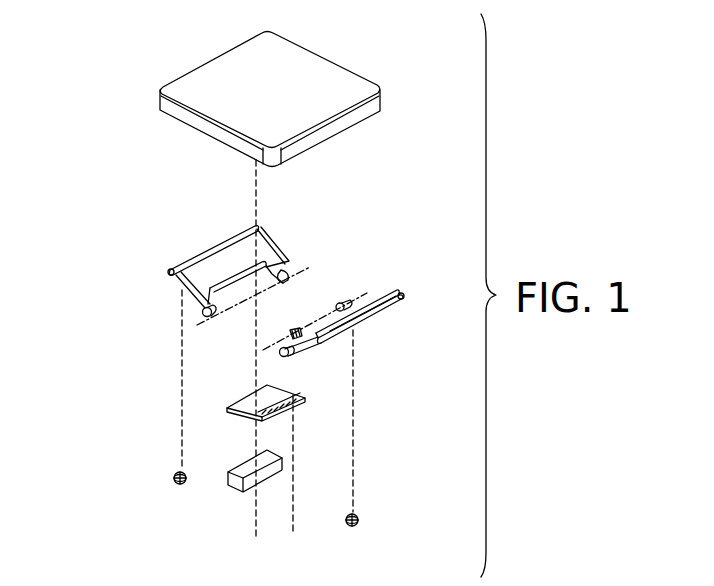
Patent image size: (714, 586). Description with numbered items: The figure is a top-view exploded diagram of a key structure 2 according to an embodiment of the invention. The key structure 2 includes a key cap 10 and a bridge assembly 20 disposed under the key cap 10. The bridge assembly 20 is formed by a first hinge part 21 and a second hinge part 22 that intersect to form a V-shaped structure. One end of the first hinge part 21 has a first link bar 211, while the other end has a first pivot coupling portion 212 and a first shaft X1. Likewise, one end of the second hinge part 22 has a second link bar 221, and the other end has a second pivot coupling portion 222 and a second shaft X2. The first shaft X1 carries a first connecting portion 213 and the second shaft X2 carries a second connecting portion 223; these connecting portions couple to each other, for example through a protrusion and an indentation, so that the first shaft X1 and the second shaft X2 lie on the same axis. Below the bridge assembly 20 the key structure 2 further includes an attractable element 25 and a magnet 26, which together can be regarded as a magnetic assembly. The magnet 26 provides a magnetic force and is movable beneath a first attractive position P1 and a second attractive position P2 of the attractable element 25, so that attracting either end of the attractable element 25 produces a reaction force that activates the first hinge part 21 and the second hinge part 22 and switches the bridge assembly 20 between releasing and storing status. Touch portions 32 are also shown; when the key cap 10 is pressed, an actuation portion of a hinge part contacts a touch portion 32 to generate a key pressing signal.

The key structure 2 is at (84, 72).
The key cap 10 is at (312, 72).
The bridge assembly 20 is at (417, 285).
The first hinge part 21 is at (270, 257).
The first link bar 211 is at (170, 273).
The first pivot coupling portion 212 is at (203, 315).
The first connecting portion 213 is at (234, 313).
The second hinge part 22 is at (372, 320).
The second link bar 221 is at (402, 298).
The second pivot coupling portion 222 is at (286, 356).
The second connecting portion 223 is at (283, 337).
The attractable element 25 is at (288, 414).
The magnet 26 is at (262, 476).
The touch portion 32 is at (180, 485).
The first attractive position P1 is at (252, 440).
The second attractive position P2 is at (293, 458).
The first shaft X1 is at (296, 264).
The second shaft X2 is at (338, 304).